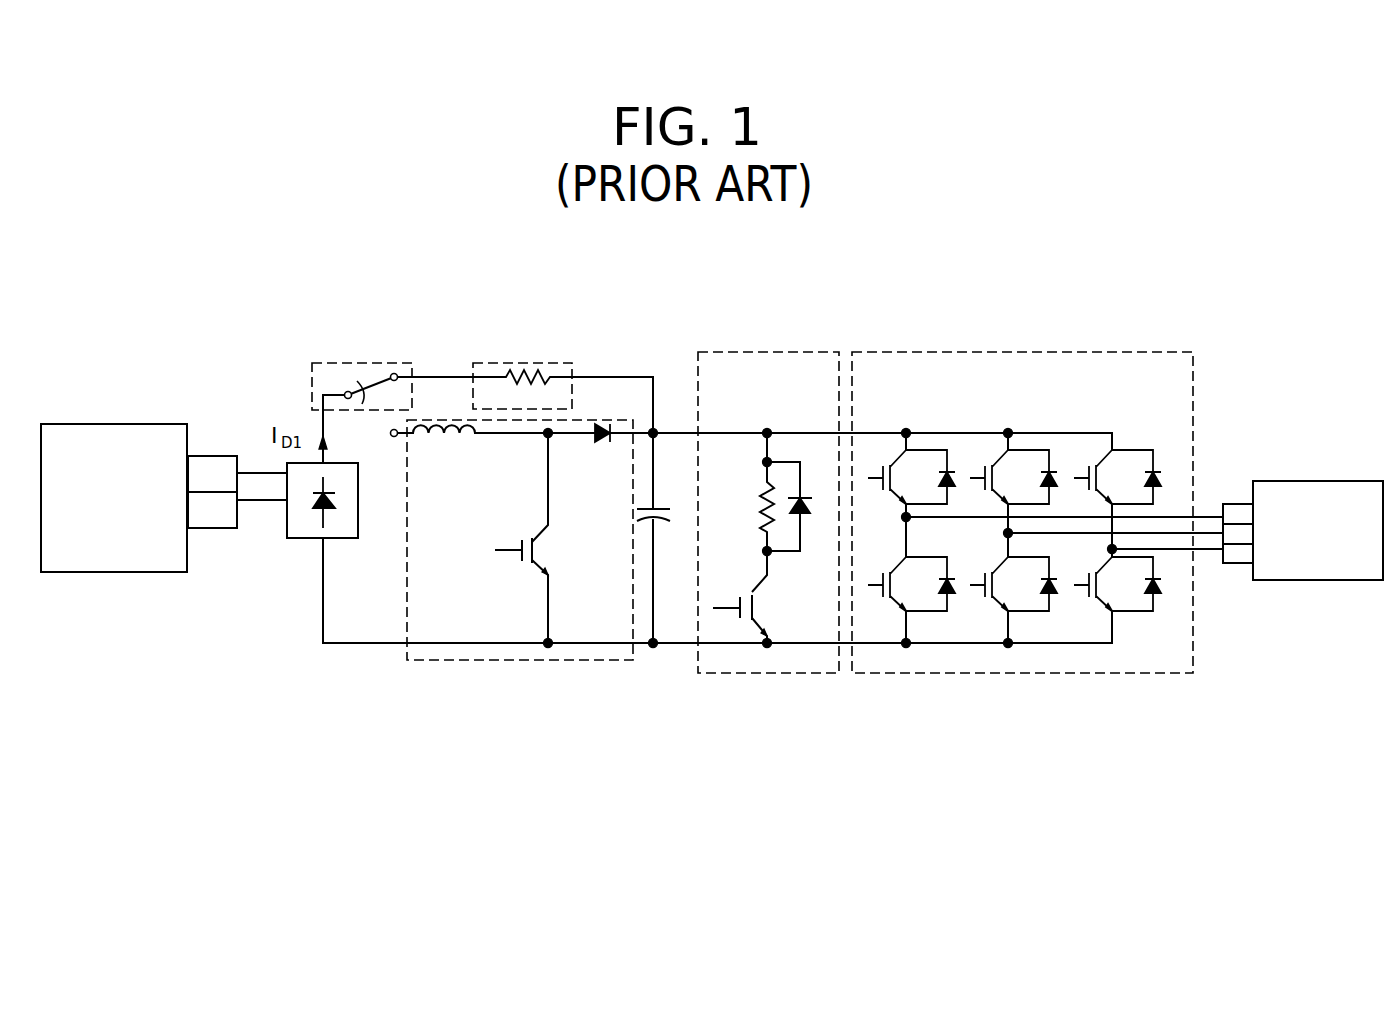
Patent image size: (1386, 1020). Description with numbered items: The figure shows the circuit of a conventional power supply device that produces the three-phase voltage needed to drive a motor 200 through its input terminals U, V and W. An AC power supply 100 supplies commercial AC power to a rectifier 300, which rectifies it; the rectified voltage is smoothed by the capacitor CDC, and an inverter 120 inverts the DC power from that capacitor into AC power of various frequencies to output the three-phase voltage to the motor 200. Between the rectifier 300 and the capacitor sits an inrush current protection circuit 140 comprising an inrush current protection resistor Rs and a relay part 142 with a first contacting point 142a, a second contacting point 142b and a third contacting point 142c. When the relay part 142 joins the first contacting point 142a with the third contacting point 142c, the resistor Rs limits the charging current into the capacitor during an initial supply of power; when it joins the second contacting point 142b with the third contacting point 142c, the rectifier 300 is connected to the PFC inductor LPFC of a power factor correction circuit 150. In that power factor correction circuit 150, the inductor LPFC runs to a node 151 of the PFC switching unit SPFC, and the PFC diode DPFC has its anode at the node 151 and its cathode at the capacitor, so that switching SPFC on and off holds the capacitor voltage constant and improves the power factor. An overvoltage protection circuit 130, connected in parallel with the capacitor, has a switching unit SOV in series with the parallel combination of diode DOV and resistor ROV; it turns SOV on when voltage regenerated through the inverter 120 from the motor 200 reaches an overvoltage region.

The AC power supply 100 is at (100, 424).
The rectifier 300 is at (287, 520).
The relay part 142 is at (366, 360).
The first contacting point 142a is at (397, 374).
The second contacting point 142b is at (394, 437).
The third contacting point 142c is at (346, 393).
The inrush current protection circuit 140 is at (528, 363).
The power factor correction (PFC) circuit 150 is at (510, 568).
The node 151 is at (548, 438).
The overvoltage protection circuit 130 is at (766, 352).
The inverter 120 is at (990, 352).
The motor 200 is at (1300, 481).